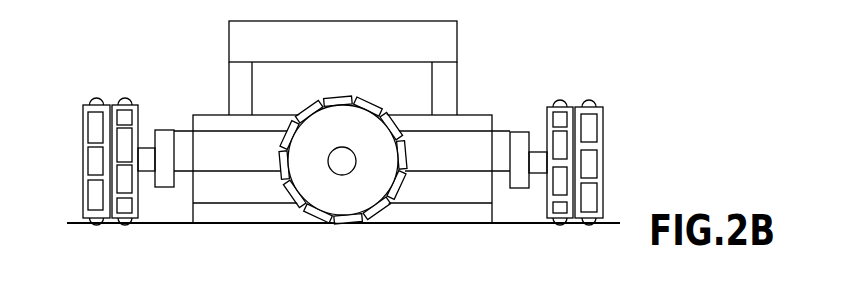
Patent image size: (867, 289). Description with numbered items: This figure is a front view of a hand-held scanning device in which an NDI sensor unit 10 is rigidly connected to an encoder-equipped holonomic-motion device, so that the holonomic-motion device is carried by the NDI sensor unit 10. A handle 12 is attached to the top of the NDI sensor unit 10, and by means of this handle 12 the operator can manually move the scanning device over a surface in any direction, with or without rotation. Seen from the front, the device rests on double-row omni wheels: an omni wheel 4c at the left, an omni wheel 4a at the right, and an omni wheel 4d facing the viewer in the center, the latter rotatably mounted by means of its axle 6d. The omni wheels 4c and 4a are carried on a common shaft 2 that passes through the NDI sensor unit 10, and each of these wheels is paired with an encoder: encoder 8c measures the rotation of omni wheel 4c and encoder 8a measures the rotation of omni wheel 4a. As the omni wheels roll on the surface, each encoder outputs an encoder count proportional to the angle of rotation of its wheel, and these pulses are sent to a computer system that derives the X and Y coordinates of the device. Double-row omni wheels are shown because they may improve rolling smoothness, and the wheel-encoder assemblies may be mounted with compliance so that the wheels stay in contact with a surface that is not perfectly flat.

The axle shaft 2 is at (217, 145).
The omni wheel 4a is at (603, 160).
The omni wheel 4c is at (83, 153).
The omni wheel 4d is at (322, 193).
The axle 6d is at (355, 168).
The encoder 8a is at (518, 130).
The encoder 8c is at (167, 130).
The NDI sensor unit 10 is at (472, 108).
The handle 12 is at (457, 40).